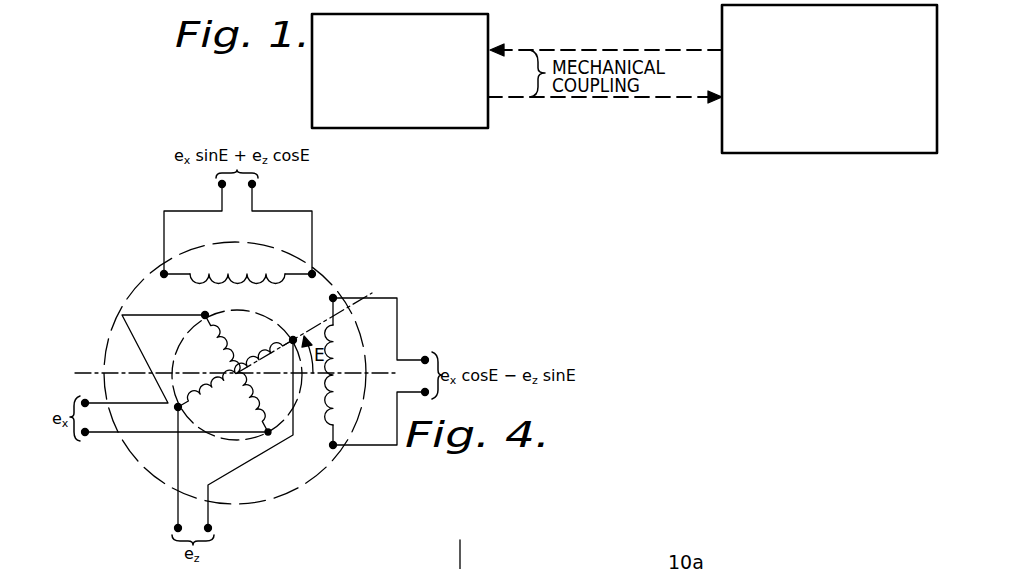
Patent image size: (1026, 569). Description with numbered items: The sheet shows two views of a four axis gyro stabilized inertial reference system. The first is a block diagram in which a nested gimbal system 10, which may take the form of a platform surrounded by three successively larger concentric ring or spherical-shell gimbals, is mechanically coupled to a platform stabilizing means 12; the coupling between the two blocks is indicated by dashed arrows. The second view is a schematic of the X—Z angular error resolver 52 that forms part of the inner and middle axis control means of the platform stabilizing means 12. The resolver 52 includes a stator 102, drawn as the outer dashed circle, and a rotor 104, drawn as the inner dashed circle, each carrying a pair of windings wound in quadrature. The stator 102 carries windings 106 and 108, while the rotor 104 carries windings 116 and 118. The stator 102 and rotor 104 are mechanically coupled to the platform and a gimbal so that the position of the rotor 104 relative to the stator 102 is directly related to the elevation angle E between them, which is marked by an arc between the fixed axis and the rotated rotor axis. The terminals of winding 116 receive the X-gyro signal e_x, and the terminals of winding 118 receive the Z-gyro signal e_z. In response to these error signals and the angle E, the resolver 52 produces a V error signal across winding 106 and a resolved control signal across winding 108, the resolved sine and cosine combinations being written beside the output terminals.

In FIG. 1, the gimbal system 10 is at (449, 117).
In FIG. 1, the platform stabilizing means 12 is at (758, 137).
In FIG. 4, the X—Z resolver 52 is at (106, 314).
In FIG. 4, the stator 102 is at (121, 311).
In FIG. 4, the rotor 104 is at (229, 306).
In FIG. 4, the stator winding 106 is at (193, 272).
In FIG. 4, the stator winding 108 is at (336, 425).
In FIG. 4, the rotor winding 116 is at (232, 346).
In FIG. 4, the rotor winding 118 is at (278, 344).